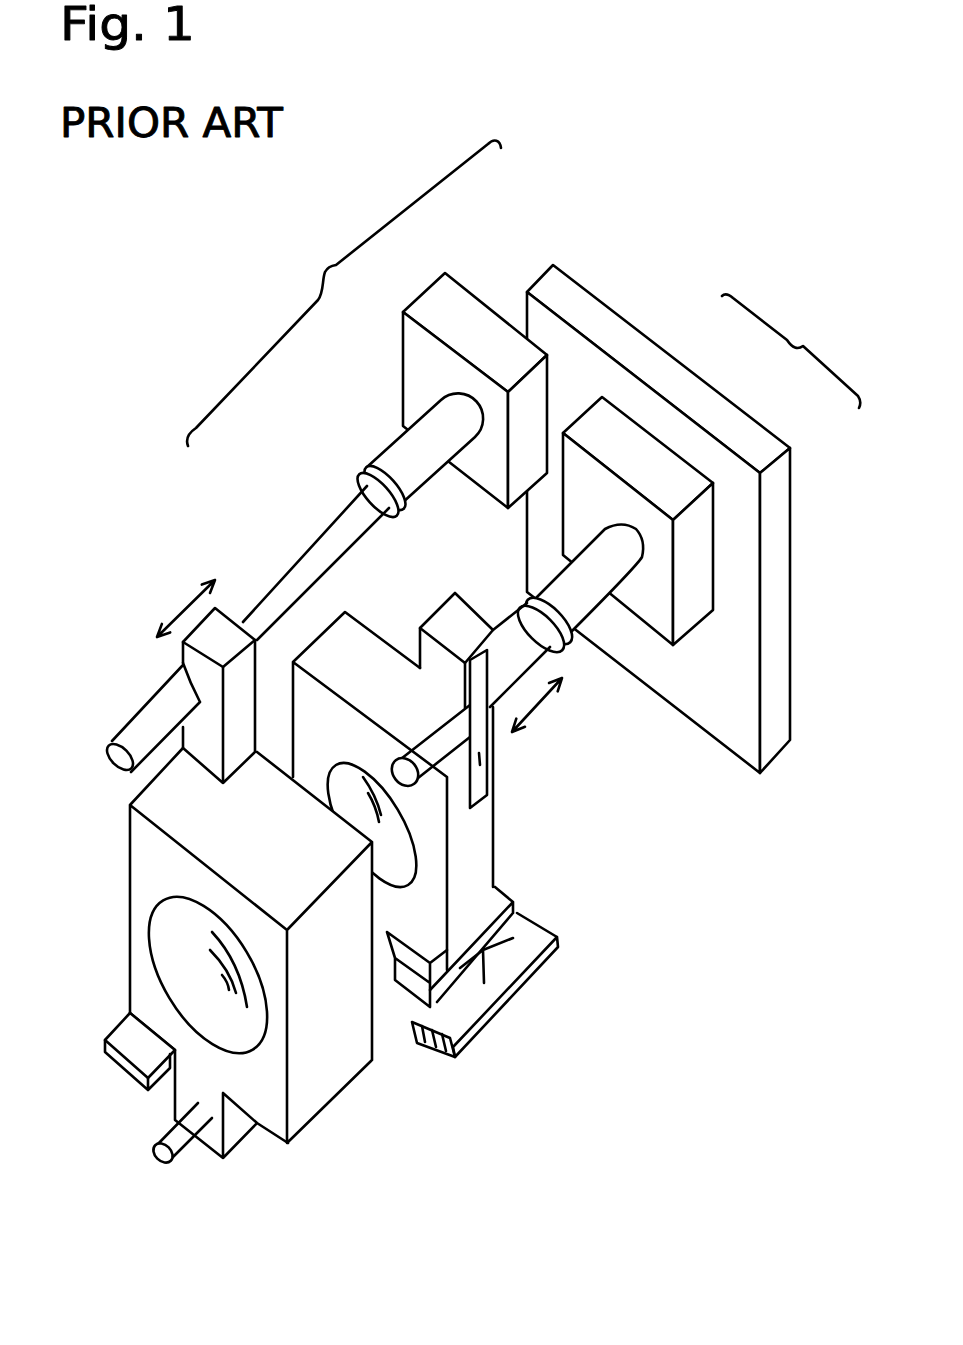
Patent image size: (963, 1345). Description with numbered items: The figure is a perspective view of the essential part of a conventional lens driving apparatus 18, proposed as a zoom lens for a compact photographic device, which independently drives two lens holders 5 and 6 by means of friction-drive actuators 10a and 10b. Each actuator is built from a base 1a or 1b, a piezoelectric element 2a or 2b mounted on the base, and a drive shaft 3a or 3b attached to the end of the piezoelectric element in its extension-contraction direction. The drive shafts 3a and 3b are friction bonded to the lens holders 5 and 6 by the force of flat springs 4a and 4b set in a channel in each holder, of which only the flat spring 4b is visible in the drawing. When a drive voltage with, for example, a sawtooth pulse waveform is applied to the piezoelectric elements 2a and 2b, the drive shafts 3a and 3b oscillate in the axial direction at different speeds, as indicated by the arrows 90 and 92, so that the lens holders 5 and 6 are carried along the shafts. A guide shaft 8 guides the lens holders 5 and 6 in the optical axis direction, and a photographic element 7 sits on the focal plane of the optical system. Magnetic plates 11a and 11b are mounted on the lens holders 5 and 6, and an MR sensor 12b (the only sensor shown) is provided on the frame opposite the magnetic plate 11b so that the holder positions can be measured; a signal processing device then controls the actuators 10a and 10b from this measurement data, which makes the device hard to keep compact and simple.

The base 1a is at (463, 312).
The base 1b is at (633, 440).
The piezoelectric element 2a is at (398, 455).
The piezoelectric element 2b is at (607, 572).
The drive shaft 3a is at (305, 560).
The drive shaft 3b is at (523, 657).
The flat spring 4a is at (219, 695).
The flat spring 4b is at (497, 774).
The lens holder 5 is at (145, 855).
The lens holder 6 is at (497, 835).
The photographic element 7 is at (720, 745).
The guide shaft 8 is at (185, 1140).
The actuator 10a is at (344, 293).
The actuator 10b is at (795, 351).
The magnetic plate 11a is at (123, 1060).
The magnetic plate 11b is at (410, 995).
The MR sensor 12b is at (500, 975).
The lens driving apparatus 18 is at (145, 330).
The arrow 90 is at (186, 608).
The arrow 92 is at (541, 703).